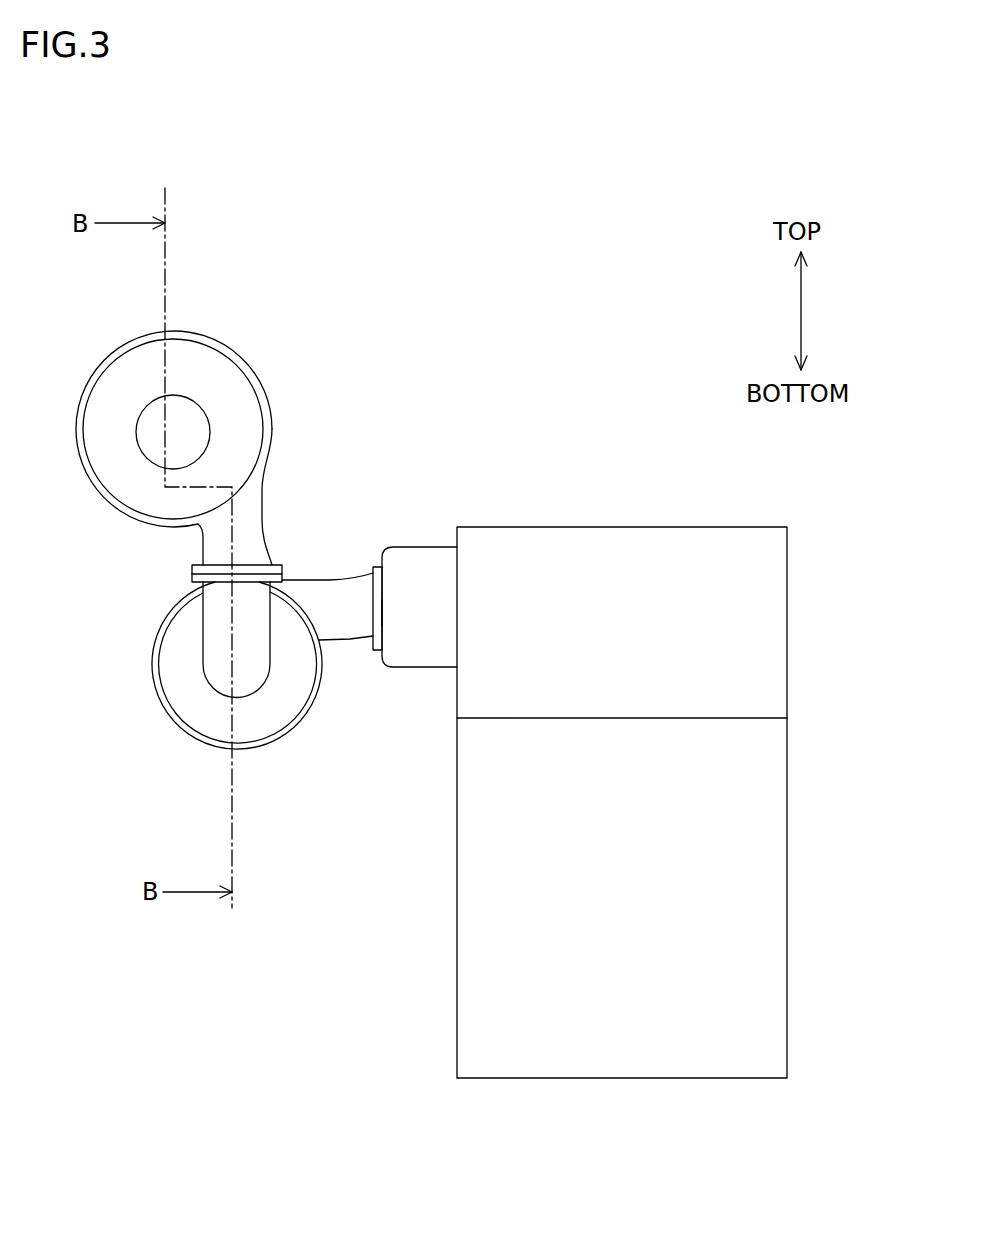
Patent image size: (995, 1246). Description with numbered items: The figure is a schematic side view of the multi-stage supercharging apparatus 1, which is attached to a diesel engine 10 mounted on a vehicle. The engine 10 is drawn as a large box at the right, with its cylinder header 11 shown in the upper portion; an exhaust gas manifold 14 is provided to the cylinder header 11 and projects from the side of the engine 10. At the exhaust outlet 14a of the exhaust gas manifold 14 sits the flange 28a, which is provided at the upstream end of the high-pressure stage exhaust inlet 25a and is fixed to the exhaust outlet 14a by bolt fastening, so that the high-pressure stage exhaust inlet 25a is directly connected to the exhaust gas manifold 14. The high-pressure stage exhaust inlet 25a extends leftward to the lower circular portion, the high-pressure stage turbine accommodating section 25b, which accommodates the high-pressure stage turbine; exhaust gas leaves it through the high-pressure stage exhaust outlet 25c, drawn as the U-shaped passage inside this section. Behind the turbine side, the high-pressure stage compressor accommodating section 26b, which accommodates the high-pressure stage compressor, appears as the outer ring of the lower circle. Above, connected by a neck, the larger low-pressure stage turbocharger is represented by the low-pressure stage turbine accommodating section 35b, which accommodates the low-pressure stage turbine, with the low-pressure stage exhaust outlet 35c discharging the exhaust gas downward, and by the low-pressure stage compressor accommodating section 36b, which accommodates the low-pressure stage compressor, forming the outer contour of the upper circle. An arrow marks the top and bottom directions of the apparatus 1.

The multi-stage supercharging apparatus 1 is at (537, 287).
The diesel engine 10 is at (713, 505).
The cylinder header 11 is at (616, 661).
The exhaust gas manifold 14 is at (415, 668).
The exhaust outlet 14a is at (399, 618).
The high-pressure stage exhaust inlet 25a is at (340, 595).
The high-pressure stage turbine accommodating section 25b is at (173, 680).
The high-pressure stage exhaust outlet 25c is at (255, 660).
The high-pressure stage compressor accommodating section 26b is at (153, 632).
The flange 28a is at (372, 652).
The low-pressure stage turbine accommodating section 35b is at (223, 380).
The low-pressure stage exhaust outlet 35c is at (257, 490).
The low-pressure stage compressor accommodating section 36b is at (88, 385).